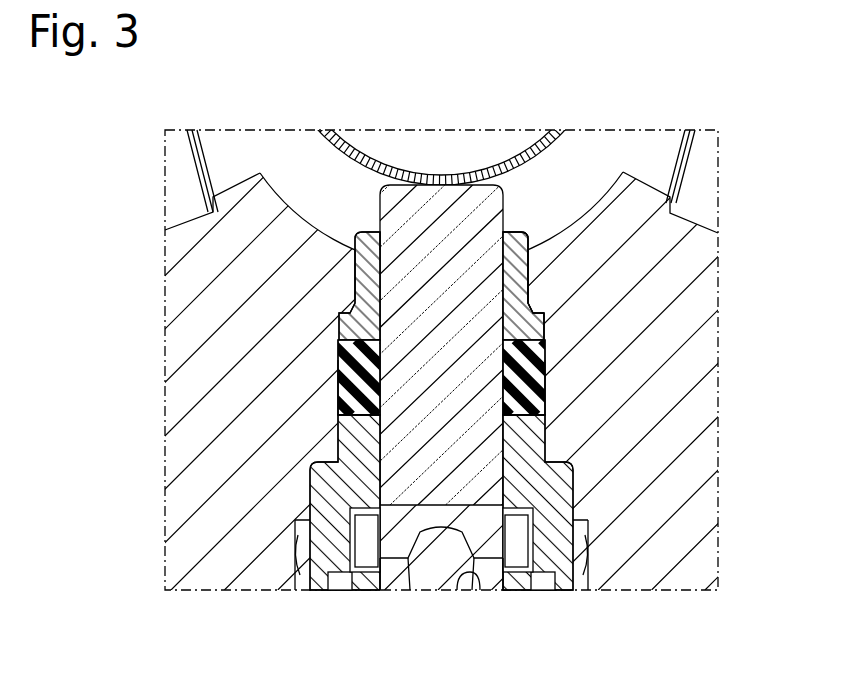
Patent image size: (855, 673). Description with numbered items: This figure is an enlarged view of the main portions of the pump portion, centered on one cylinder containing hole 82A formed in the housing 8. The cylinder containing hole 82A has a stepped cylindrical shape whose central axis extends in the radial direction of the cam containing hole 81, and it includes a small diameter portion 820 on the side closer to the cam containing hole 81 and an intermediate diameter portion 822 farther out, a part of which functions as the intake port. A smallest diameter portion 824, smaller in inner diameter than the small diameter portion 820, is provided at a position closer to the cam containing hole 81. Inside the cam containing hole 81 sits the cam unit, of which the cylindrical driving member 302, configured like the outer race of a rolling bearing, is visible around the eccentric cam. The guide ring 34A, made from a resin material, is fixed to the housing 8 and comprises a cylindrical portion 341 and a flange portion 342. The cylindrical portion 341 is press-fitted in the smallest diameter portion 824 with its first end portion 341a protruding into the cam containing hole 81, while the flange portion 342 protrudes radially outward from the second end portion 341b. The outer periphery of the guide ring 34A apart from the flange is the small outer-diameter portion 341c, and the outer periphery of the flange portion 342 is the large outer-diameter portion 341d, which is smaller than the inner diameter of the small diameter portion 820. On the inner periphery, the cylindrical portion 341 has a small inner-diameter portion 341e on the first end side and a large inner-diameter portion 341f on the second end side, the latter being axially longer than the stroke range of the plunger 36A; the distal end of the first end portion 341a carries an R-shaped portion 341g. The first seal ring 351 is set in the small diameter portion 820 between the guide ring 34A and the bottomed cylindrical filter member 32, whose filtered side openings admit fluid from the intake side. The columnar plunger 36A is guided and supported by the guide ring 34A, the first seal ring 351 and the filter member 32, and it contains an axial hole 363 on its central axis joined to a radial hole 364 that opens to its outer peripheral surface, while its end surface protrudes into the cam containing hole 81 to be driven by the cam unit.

The housing 8 is at (690, 461).
The cam containing hole 81 is at (282, 182).
The driving member 302 is at (522, 152).
The filter member 32 is at (297, 527).
The cylindrical portion 341 is at (352, 262).
The first end portion 341a is at (506, 232).
The second end portion 341b is at (548, 378).
The small outer-diameter portion 341c is at (532, 240).
The large outer-diameter portion 341d is at (548, 340).
The small inner-diameter portion 341e is at (394, 183).
The large inner-diameter portion 341f is at (340, 372).
The R-shaped portion 341g is at (530, 250).
The flange portion 342 is at (340, 330).
The guide ring 34A is at (338, 288).
The first seal ring 351 is at (340, 398).
The plunger 36A is at (420, 438).
The axial hole 363 is at (418, 592).
The radial hole 364 is at (458, 590).
The small diameter portion 820 is at (548, 322).
The intermediate diameter portion 822 is at (575, 535).
The smallest diameter portion 824 is at (548, 300).
The cylinder containing hole 82A is at (580, 583).